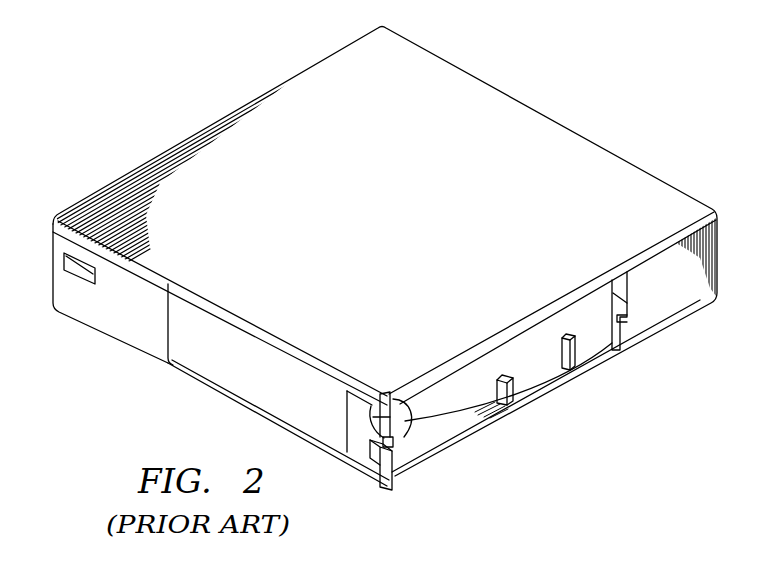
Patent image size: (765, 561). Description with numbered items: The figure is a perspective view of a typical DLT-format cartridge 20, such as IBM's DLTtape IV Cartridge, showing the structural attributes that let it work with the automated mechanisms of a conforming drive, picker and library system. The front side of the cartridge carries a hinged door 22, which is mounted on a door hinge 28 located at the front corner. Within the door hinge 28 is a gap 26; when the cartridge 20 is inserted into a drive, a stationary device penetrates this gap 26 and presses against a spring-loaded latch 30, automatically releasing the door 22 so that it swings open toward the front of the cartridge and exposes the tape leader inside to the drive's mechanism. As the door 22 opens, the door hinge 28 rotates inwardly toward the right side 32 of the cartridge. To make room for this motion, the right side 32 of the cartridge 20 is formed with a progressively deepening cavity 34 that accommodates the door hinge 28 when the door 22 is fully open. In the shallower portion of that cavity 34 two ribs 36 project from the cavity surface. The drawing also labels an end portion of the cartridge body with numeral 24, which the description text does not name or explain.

The DLT format cartridge 20 is at (585, 109).
The hinged door 22 is at (233, 383).
The end wall with slot 24 is at (97, 323).
The gap 26 is at (400, 448).
The door hinge 28 is at (395, 488).
The spring-loaded latch 30 is at (407, 408).
The right side 32 is at (675, 315).
The progressively deepening cavity 34 is at (452, 428).
The ribs 36 is at (517, 405).